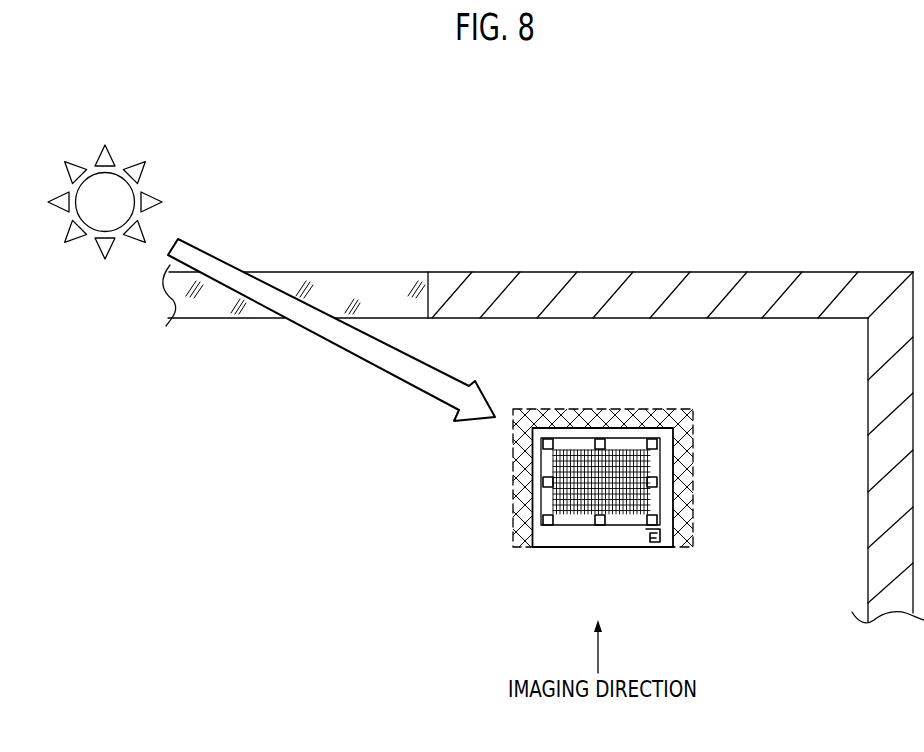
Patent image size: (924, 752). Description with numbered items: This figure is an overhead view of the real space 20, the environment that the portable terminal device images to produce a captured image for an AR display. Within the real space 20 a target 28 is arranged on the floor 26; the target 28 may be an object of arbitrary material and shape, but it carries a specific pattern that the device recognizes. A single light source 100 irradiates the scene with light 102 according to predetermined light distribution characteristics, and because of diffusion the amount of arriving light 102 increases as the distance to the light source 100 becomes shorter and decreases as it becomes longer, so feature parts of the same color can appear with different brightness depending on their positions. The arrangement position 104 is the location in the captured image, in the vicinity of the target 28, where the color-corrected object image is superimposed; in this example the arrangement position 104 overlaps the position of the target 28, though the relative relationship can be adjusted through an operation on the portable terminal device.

The real space 20 is at (557, 188).
The light source 100 is at (162, 205).
The light 102 is at (345, 354).
The arrangement position 104 is at (694, 493).
The floor 26 is at (468, 520).
The target 28 is at (605, 538).